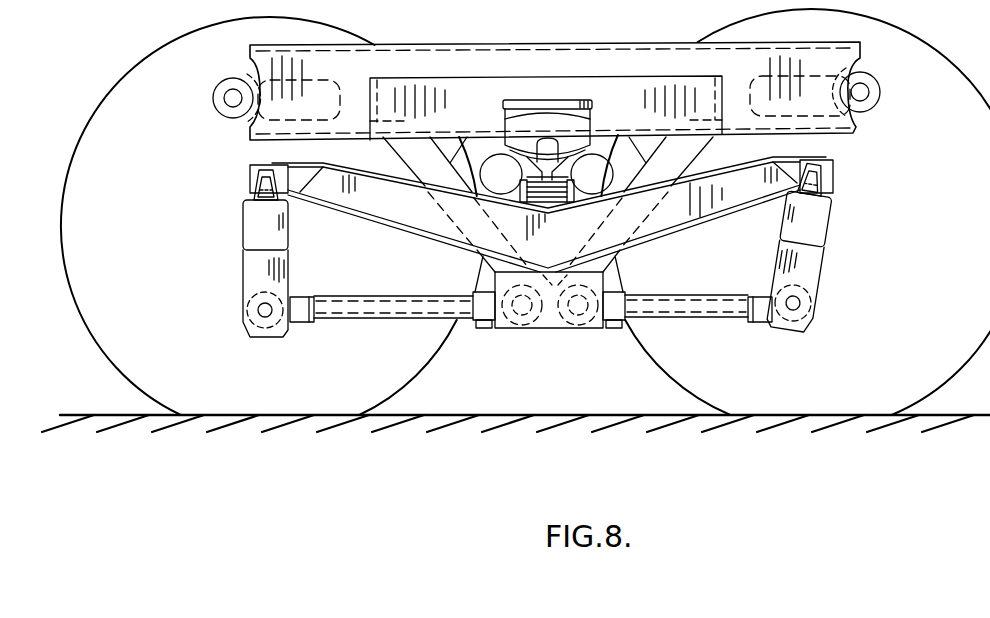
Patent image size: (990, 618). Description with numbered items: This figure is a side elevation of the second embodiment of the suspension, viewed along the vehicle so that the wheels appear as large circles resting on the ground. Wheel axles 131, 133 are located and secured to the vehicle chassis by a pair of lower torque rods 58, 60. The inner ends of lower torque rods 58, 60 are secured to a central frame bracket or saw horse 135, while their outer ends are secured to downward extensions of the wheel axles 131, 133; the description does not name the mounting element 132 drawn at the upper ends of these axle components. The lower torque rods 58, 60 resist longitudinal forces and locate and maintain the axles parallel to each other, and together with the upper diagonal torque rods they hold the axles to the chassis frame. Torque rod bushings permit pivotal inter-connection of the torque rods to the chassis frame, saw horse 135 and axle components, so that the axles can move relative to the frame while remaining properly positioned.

The lower longitudinal torque rod 58 is at (376, 317).
The lower longitudinal torque rod 60 is at (692, 315).
The wheel axle 131 is at (243, 236).
The mounting bracket 132 is at (254, 188).
The wheel axle 133 is at (831, 232).
The saw horse 135 is at (604, 276).